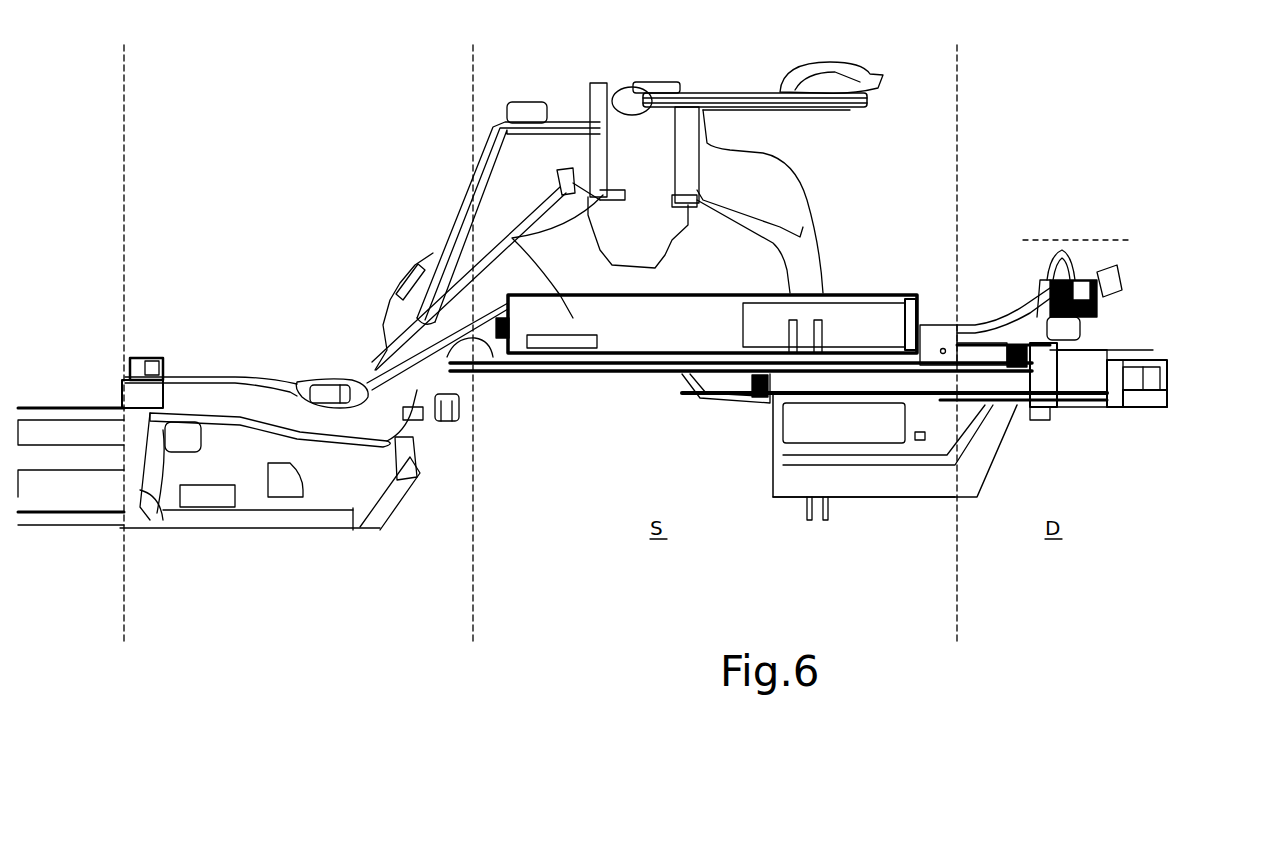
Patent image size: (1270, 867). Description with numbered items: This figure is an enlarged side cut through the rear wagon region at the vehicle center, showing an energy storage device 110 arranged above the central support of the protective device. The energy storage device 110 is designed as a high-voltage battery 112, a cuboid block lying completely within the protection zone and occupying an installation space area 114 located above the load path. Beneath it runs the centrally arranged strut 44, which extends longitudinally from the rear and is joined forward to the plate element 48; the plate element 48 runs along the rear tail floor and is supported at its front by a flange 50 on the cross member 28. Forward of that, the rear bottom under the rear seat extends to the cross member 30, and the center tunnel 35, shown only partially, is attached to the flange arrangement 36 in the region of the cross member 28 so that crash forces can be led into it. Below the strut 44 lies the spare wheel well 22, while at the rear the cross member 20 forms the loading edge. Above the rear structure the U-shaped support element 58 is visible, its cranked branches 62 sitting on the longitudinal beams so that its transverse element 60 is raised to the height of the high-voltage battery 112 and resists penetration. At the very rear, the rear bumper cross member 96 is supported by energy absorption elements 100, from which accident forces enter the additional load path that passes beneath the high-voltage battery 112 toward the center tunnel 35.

The cross member 20 is at (1133, 273).
The spare wheel well 22 is at (897, 520).
The cross member 28 is at (447, 360).
The cross member 30 is at (163, 517).
The center tunnel 35 is at (62, 433).
The flange arrangement 36 is at (128, 363).
The strut 44 is at (823, 383).
The plate element 48 is at (603, 373).
The flange 50 is at (503, 373).
The support element 58 is at (990, 313).
The transverse element 60 is at (1055, 273).
The branches 62 is at (940, 326).
The rear bumper cross member 96 is at (1140, 347).
The energy absorption elements 100 is at (1090, 393).
The energy storage device 110 is at (753, 293).
The high-voltage battery 112 is at (510, 233).
The installation space area 114 is at (706, 276).